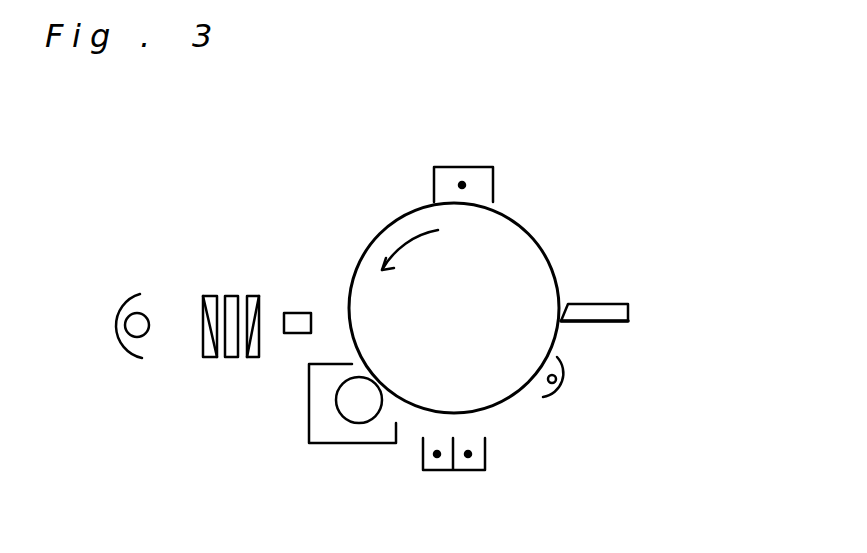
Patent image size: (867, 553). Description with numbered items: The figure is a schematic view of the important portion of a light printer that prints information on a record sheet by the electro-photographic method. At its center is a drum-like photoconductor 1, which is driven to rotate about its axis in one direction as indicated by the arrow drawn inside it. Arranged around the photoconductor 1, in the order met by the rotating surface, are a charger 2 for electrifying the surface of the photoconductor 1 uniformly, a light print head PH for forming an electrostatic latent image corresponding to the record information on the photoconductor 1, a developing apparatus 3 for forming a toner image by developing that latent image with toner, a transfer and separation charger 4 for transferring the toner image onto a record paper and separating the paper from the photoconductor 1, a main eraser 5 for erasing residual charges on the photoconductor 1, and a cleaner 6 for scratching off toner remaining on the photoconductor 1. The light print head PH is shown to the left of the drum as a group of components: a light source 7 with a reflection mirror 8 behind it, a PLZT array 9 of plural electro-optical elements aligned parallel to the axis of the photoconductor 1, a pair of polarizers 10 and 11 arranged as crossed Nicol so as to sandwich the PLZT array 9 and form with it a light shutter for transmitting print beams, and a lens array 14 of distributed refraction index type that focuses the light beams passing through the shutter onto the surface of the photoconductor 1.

The photoconductor 1 is at (543, 248).
The charger 2 is at (493, 180).
The developing apparatus 3 is at (317, 418).
The transfer and separation charger 4 is at (485, 462).
The main eraser 5 is at (573, 383).
The cleaner 6 is at (628, 304).
The light source 7 is at (137, 313).
The reflection mirror 8 is at (106, 330).
The PLZT array 9 is at (230, 296).
The polarizer 10 is at (204, 357).
The polarizer 11 is at (250, 357).
The lens array 14 is at (303, 313).
The light print head PH is at (262, 248).